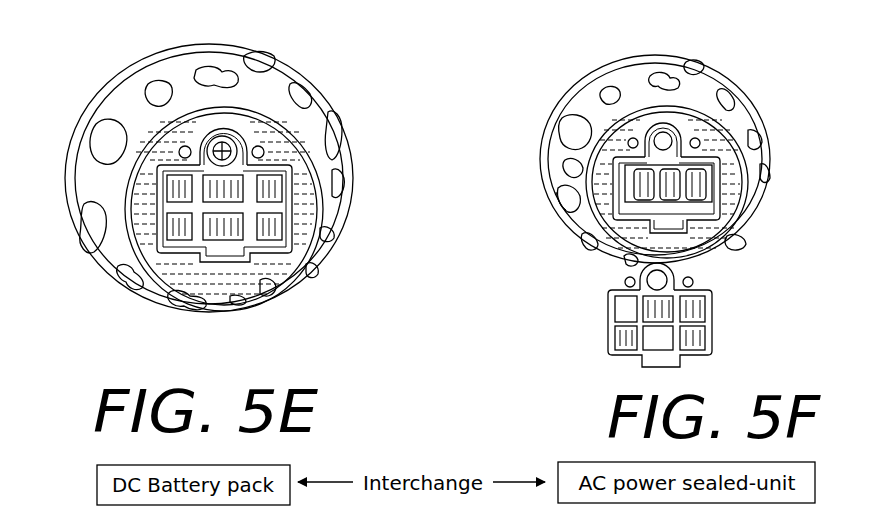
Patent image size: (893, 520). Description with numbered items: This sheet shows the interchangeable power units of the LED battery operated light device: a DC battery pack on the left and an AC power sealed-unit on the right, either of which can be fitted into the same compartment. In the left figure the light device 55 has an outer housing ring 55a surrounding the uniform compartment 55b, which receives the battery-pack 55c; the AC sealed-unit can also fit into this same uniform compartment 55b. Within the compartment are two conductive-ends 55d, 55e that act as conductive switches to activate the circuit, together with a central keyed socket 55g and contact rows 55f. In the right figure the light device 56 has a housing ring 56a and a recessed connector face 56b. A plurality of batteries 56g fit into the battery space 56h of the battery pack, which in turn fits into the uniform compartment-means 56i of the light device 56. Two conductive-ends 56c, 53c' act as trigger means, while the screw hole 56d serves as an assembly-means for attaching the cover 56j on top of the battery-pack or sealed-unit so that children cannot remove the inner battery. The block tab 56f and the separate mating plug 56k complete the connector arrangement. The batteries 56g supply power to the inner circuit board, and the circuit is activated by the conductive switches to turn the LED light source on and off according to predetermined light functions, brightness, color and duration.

In FIG. 5E, the DC battery pack 55 is at (355, 200).
In FIG. 5E, the battery pack housing ring 55a is at (65, 192).
In FIG. 5E, the uniform compartment 55b is at (308, 230).
In FIG. 5E, the battery-pack 55c is at (170, 242).
In FIG. 5E, the conductive-end 55d is at (263, 148).
In FIG. 5E, the conductive-end 55e is at (183, 152).
In FIG. 5E, the upper contacts 55f is at (273, 177).
In FIG. 5E, the central keyed socket 55g is at (215, 147).
In FIG. 5F, the light device 56 is at (565, 228).
In FIG. 5F, the sealed unit housing ring 56a is at (738, 104).
In FIG. 5F, the connector face recess 56b is at (607, 130).
In FIG. 5F, the conductive-end 56c is at (632, 147).
In FIG. 5F, the right alignment pin 53c' is at (761, 121).
In FIG. 5F, the screw hole 56d is at (663, 133).
In FIG. 5F, the connector block tab 56f is at (682, 229).
In FIG. 5F, the batteries 56g is at (698, 185).
In FIG. 5F, the battery space 56h is at (712, 162).
In FIG. 5F, the uniform compartment-means 56i is at (565, 203).
In FIG. 5F, the cover 56j is at (643, 352).
In FIG. 5F, the mating connector plug 56k is at (643, 290).